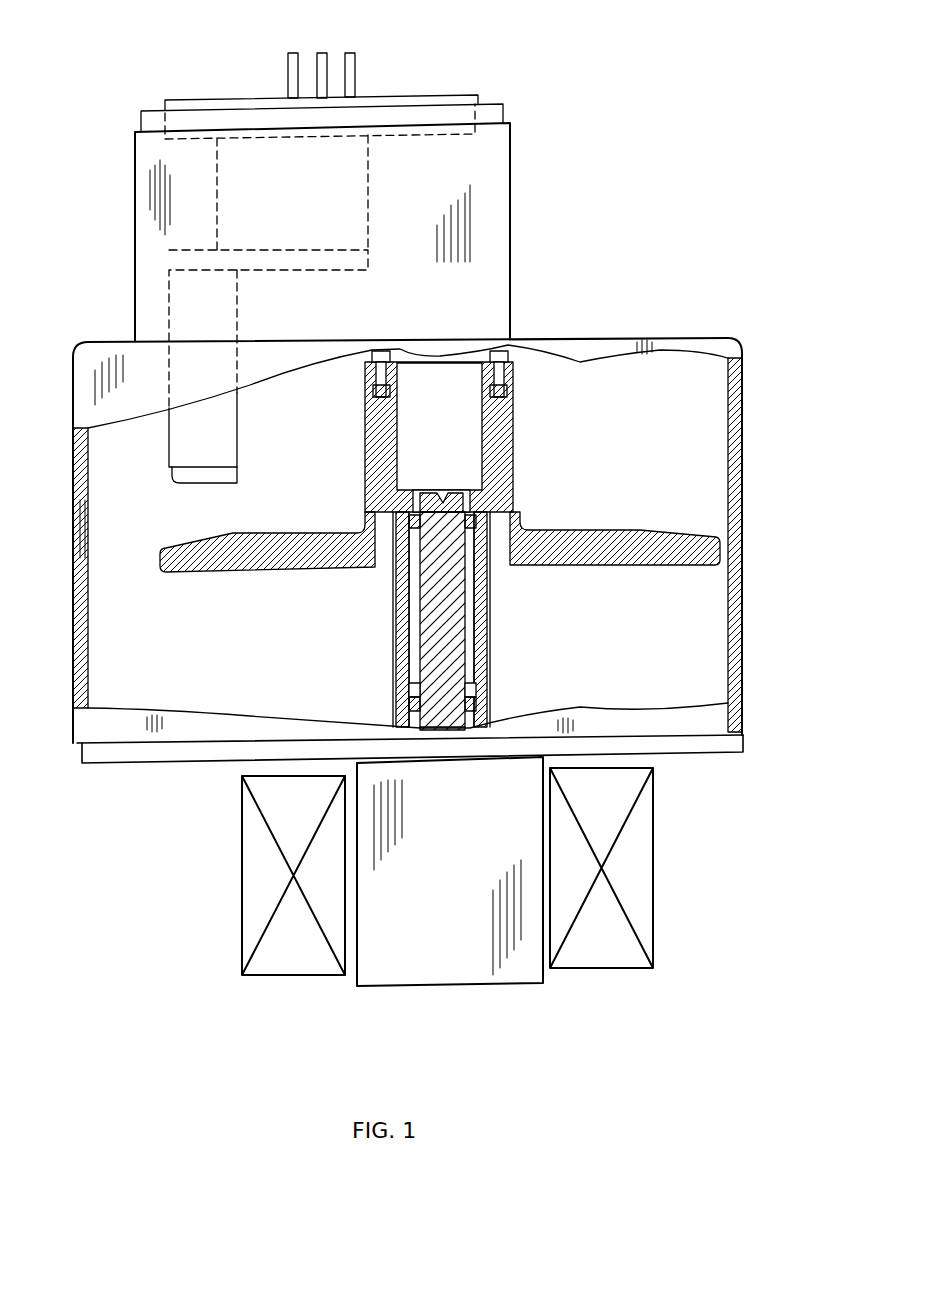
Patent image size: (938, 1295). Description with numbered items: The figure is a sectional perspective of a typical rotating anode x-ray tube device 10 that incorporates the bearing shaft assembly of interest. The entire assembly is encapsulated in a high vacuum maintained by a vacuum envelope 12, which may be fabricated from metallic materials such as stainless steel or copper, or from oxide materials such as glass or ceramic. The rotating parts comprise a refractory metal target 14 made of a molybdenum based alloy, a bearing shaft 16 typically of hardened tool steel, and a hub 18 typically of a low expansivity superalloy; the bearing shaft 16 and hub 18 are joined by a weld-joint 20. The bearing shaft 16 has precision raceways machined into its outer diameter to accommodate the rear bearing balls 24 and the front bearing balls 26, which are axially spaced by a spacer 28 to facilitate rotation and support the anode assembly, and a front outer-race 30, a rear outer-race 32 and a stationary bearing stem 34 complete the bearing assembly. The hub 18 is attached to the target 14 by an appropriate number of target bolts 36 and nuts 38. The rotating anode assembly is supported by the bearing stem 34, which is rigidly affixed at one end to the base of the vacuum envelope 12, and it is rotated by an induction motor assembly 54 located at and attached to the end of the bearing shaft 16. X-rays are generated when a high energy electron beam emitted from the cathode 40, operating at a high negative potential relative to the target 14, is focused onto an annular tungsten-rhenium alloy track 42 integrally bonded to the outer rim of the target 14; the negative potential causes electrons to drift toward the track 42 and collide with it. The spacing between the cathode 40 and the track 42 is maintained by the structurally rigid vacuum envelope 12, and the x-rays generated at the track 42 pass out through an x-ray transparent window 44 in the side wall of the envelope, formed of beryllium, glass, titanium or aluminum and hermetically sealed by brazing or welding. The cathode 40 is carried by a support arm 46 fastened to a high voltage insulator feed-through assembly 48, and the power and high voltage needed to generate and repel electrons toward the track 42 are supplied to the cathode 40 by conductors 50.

The rotating anode x-ray tube device 10 is at (535, 226).
The vacuum envelope 12 is at (745, 745).
The target 14 is at (625, 527).
The bearing shaft 16 is at (455, 655).
The hub 18 is at (492, 440).
The weld-joint 20 is at (395, 505).
The rear bearing balls 24 is at (480, 697).
The front bearing balls 26 is at (487, 503).
The spacer 28 is at (408, 617).
The front outer-race 30 is at (405, 528).
The rear outer-race 32 is at (405, 692).
The bearing stem 34 is at (490, 603).
The target bolts 36 is at (382, 350).
The nuts 38 is at (372, 390).
The cathode 40 is at (236, 478).
The track 42 is at (195, 537).
The x-ray transparent window 44 is at (74, 530).
The support arm 46 is at (190, 252).
The high voltage insulator feed-through assembly 48 is at (225, 97).
The conductors 50 is at (350, 53).
The induction motor assembly 54 is at (493, 988).